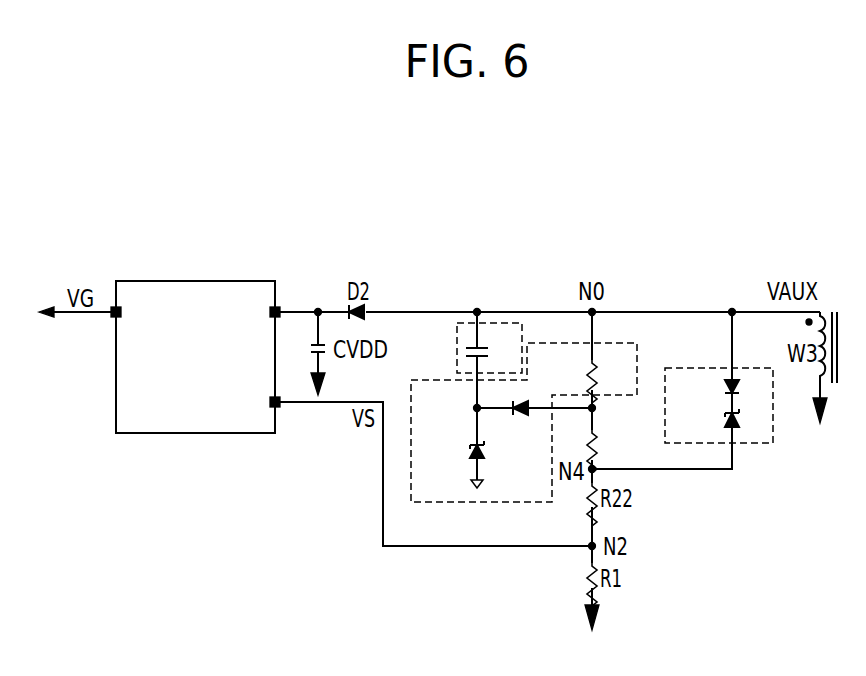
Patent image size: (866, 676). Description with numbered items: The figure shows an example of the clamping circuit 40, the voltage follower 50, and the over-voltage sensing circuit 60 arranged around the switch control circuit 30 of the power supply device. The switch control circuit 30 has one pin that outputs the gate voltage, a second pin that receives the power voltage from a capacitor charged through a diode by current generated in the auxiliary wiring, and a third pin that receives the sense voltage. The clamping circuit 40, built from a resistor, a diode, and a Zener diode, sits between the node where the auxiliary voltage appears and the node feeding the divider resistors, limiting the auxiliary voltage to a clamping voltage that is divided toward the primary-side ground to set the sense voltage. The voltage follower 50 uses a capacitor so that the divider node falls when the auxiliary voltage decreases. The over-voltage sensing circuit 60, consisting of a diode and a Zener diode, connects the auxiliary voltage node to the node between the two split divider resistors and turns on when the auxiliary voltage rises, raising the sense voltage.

The switch control circuit 30 is at (197, 281).
The clamping circuit 40 is at (472, 504).
The voltage follower 50 is at (457, 349).
The over-voltage sensing circuit 60 is at (757, 445).